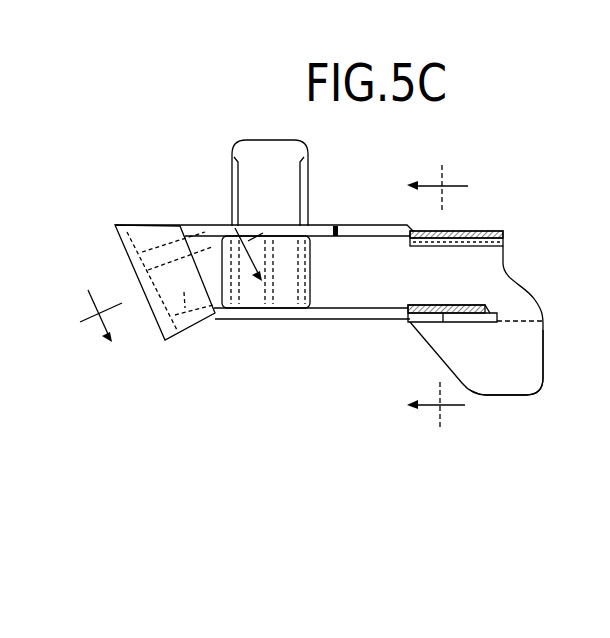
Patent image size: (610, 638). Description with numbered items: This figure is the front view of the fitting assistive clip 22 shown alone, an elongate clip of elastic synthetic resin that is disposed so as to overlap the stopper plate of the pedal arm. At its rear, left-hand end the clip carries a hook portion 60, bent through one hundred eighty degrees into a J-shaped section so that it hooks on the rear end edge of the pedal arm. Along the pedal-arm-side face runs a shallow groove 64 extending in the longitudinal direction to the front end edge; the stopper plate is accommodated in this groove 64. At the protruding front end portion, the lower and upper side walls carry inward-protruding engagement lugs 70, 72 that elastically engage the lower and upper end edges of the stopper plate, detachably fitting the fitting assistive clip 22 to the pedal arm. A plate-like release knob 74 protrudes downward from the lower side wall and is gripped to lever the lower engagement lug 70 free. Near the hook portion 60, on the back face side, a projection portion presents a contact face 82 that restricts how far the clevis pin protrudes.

The fitting assistive clip 22 is at (161, 158).
The hook portion 60 is at (184, 323).
The groove 64 is at (388, 287).
The engagement lug 70 is at (443, 315).
The engagement lug 72 is at (466, 231).
The release knob 74 is at (502, 373).
The contact face 82 is at (267, 162).